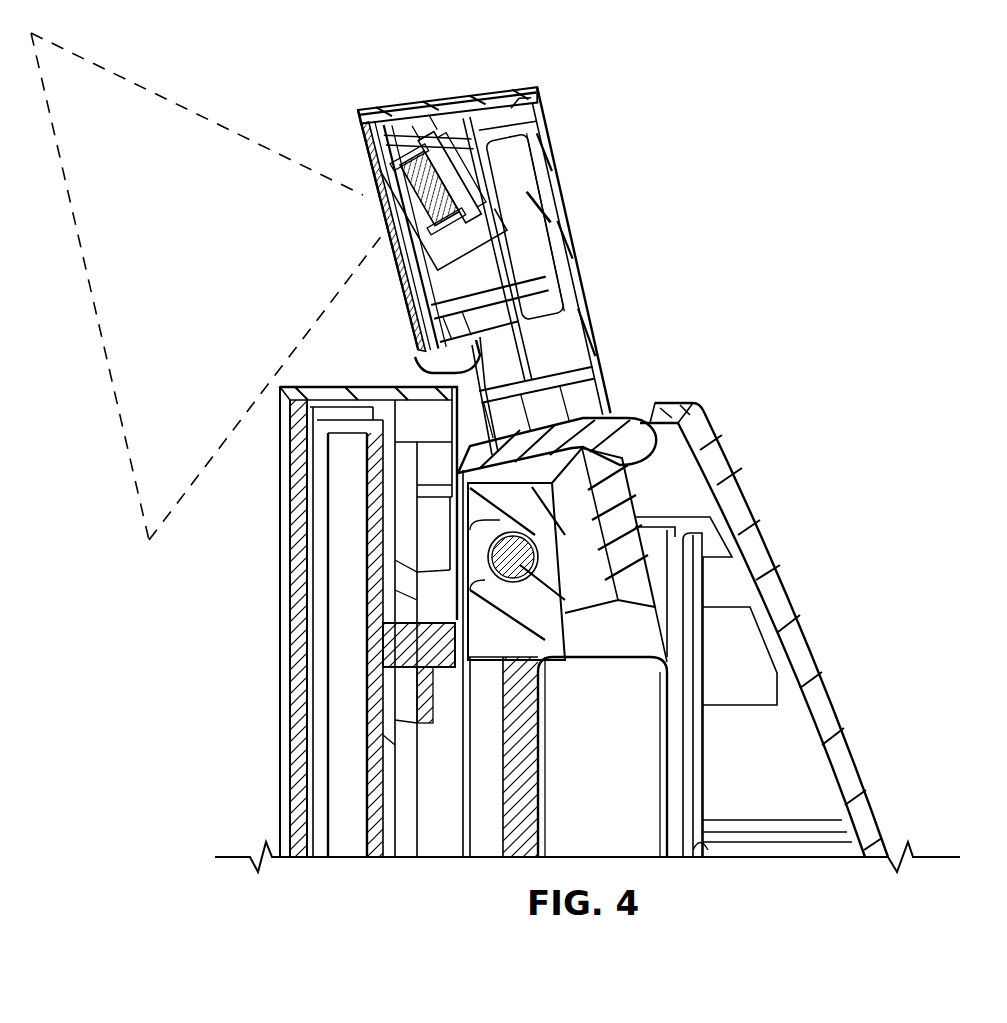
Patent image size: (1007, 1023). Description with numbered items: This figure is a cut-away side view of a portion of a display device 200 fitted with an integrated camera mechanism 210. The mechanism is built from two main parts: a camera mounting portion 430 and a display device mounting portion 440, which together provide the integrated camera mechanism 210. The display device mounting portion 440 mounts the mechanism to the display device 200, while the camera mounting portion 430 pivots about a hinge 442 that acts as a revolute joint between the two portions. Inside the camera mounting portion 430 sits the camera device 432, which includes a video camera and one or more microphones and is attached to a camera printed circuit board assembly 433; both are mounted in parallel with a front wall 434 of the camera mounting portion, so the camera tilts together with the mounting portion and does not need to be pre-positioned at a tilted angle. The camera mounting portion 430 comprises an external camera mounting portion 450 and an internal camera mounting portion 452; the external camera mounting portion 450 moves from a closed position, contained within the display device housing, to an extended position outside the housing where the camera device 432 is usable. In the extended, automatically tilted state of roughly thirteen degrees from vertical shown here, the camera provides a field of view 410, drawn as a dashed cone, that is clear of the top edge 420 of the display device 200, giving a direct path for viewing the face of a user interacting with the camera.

The display device 200 is at (724, 452).
The integrated camera mechanism 210 is at (594, 114).
The field of view 410 is at (80, 58).
The top edge 420 is at (282, 388).
The camera mounting portion 430 is at (468, 95).
The camera device 432 is at (400, 160).
The camera printed circuit board assembly 433 is at (445, 175).
The front wall 434 is at (365, 143).
The display device mounting portion 440 is at (667, 748).
The hinge 442 is at (515, 575).
The external camera mounting portion 450 is at (566, 196).
The internal camera mounting portion 452 is at (633, 505).